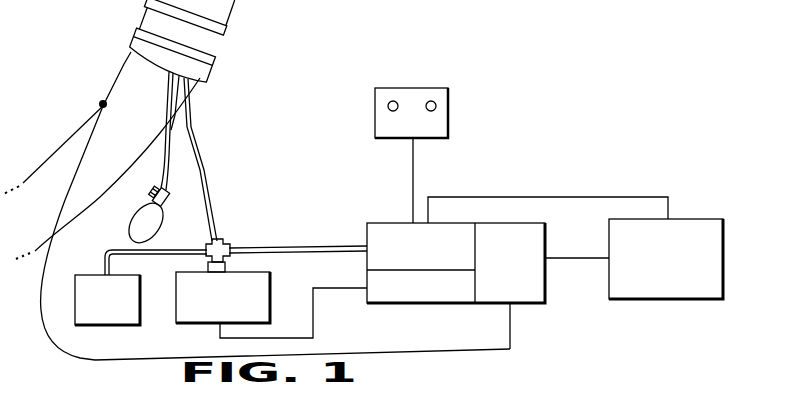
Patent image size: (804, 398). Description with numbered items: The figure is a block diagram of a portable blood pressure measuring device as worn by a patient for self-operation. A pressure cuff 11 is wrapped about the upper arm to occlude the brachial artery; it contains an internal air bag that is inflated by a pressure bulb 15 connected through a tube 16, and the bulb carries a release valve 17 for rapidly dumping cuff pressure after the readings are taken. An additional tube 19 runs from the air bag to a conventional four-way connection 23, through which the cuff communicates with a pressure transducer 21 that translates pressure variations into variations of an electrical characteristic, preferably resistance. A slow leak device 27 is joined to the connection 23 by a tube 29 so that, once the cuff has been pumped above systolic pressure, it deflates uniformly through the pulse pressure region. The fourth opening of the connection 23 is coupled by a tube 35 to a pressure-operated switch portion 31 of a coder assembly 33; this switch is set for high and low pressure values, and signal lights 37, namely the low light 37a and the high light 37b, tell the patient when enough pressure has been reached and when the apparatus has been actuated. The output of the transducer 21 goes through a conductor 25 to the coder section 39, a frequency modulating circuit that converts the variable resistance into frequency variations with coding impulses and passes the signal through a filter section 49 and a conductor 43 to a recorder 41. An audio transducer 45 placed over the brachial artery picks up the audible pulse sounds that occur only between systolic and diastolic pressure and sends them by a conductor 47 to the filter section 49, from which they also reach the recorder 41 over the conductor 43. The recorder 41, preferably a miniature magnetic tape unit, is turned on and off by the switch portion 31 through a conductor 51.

The pressure cuff 11 is at (213, 50).
The pressure bulb 15 is at (133, 225).
The tube 16 is at (172, 154).
The release valve 17 is at (150, 193).
The tube 19 is at (202, 188).
The pressure transducer 21 is at (258, 281).
The four-way connection 23 is at (221, 243).
The conductor 25 is at (313, 311).
The slow leak device 27 is at (110, 325).
The tube 29 is at (170, 249).
The switch portion 31 is at (368, 227).
The coder assembly 33 is at (466, 266).
The tube 35 is at (296, 245).
The signal lights 37 is at (417, 137).
The signal light 37a is at (387, 105).
The signal light 37b is at (437, 105).
The coder section 39 is at (425, 303).
The recorder 41 is at (688, 225).
The conductor 43 is at (568, 257).
The audio transducer 45 is at (101, 100).
The conductor 47 is at (86, 364).
The filter section 49 is at (530, 296).
The conductor 51 is at (500, 197).